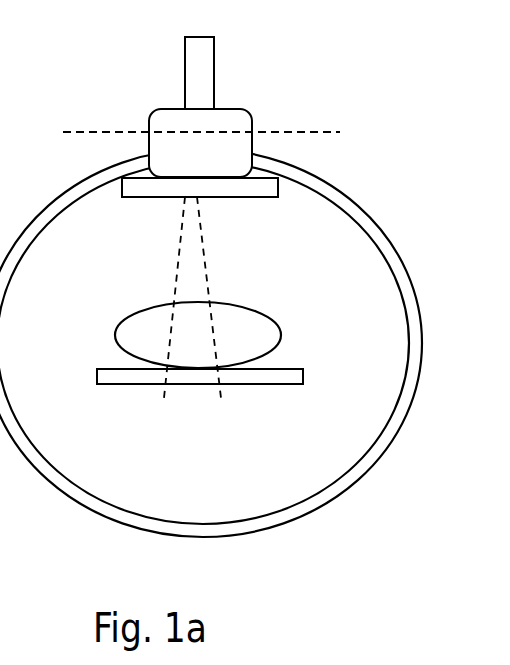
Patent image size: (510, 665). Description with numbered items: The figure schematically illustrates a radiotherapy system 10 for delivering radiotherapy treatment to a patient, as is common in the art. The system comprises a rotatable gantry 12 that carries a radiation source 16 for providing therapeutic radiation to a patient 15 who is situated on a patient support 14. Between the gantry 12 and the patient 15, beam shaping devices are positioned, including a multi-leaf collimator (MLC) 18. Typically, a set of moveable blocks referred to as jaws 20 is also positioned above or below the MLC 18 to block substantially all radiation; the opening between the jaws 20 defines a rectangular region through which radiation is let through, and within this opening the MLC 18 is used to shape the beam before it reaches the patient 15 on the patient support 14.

The radiotherapy system 10 is at (393, 89).
The rotatable gantry 12 is at (255, 153).
The patient support 14 is at (107, 373).
The patient 15 is at (250, 338).
The radiation source 16 is at (210, 73).
The multi-leaf collimator (MLC) 18 is at (149, 113).
The jaws 20 is at (131, 198).